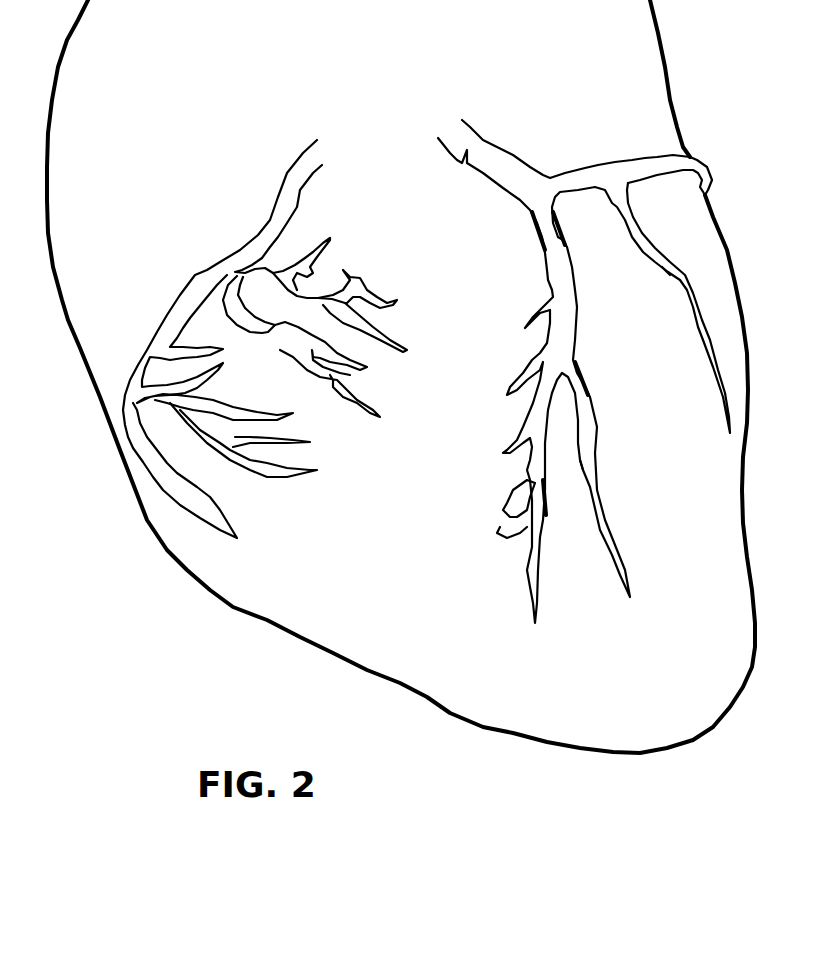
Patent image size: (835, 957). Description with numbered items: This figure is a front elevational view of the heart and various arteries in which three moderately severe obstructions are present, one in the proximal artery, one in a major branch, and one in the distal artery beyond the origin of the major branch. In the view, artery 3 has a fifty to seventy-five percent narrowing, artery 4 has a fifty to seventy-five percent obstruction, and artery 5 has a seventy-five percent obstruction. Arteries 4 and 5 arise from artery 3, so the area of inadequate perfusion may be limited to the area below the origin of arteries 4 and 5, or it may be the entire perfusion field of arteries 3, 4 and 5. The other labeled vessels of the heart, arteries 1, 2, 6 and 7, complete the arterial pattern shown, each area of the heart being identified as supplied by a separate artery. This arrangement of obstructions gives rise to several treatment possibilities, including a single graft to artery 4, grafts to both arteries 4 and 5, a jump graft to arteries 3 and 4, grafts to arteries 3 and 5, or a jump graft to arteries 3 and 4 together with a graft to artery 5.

The circumflex coronary artery branch 1 is at (263, 240).
The left main coronary artery 2 is at (460, 165).
The artery 3 is at (557, 273).
The artery 4 is at (530, 467).
The artery 5 is at (595, 470).
The aorta / circumflex artery 6 is at (595, 180).
The stenosis in circumflex artery 7 is at (670, 273).